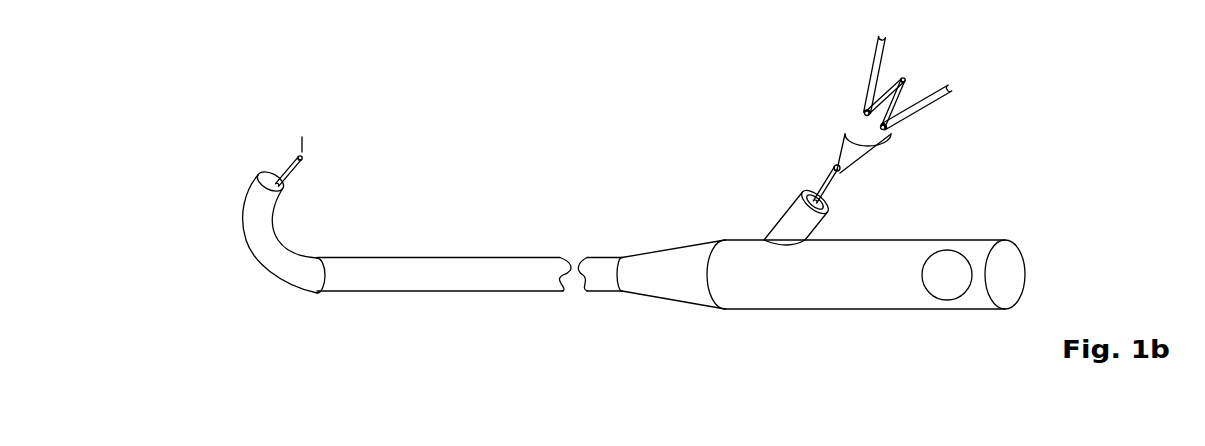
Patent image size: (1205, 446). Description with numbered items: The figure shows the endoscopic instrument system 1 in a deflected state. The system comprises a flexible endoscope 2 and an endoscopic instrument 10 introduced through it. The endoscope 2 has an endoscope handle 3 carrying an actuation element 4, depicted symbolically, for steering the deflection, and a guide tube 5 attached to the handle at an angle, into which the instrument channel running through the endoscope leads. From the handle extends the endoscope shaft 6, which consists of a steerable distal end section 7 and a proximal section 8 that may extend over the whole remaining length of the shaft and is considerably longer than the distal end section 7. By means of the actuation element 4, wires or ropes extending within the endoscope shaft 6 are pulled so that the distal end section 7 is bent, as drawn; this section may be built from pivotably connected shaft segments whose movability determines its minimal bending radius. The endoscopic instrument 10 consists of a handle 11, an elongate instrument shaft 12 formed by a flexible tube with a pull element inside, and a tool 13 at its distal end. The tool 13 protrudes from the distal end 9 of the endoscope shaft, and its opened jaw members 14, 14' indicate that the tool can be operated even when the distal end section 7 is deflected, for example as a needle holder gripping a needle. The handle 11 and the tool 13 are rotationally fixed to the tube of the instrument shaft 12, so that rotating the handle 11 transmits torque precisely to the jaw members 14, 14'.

The endoscopic instrument system 1 is at (535, 112).
The flexible endoscope 2 is at (574, 175).
The endoscope handle 3 is at (786, 311).
The actuation element 4 is at (943, 283).
The guide tube 5 is at (784, 229).
The endoscope shaft 6 is at (353, 311).
The distal end section 7 is at (268, 257).
The proximal section 8 is at (430, 283).
The distal end 9 is at (240, 162).
The endoscopic instrument 10 is at (771, 88).
The handle 11 is at (866, 83).
The instrument shaft 12 is at (815, 173).
The tool 13 is at (308, 128).
The jaw member 14 is at (260, 138).
The jaw member 14' is at (349, 182).